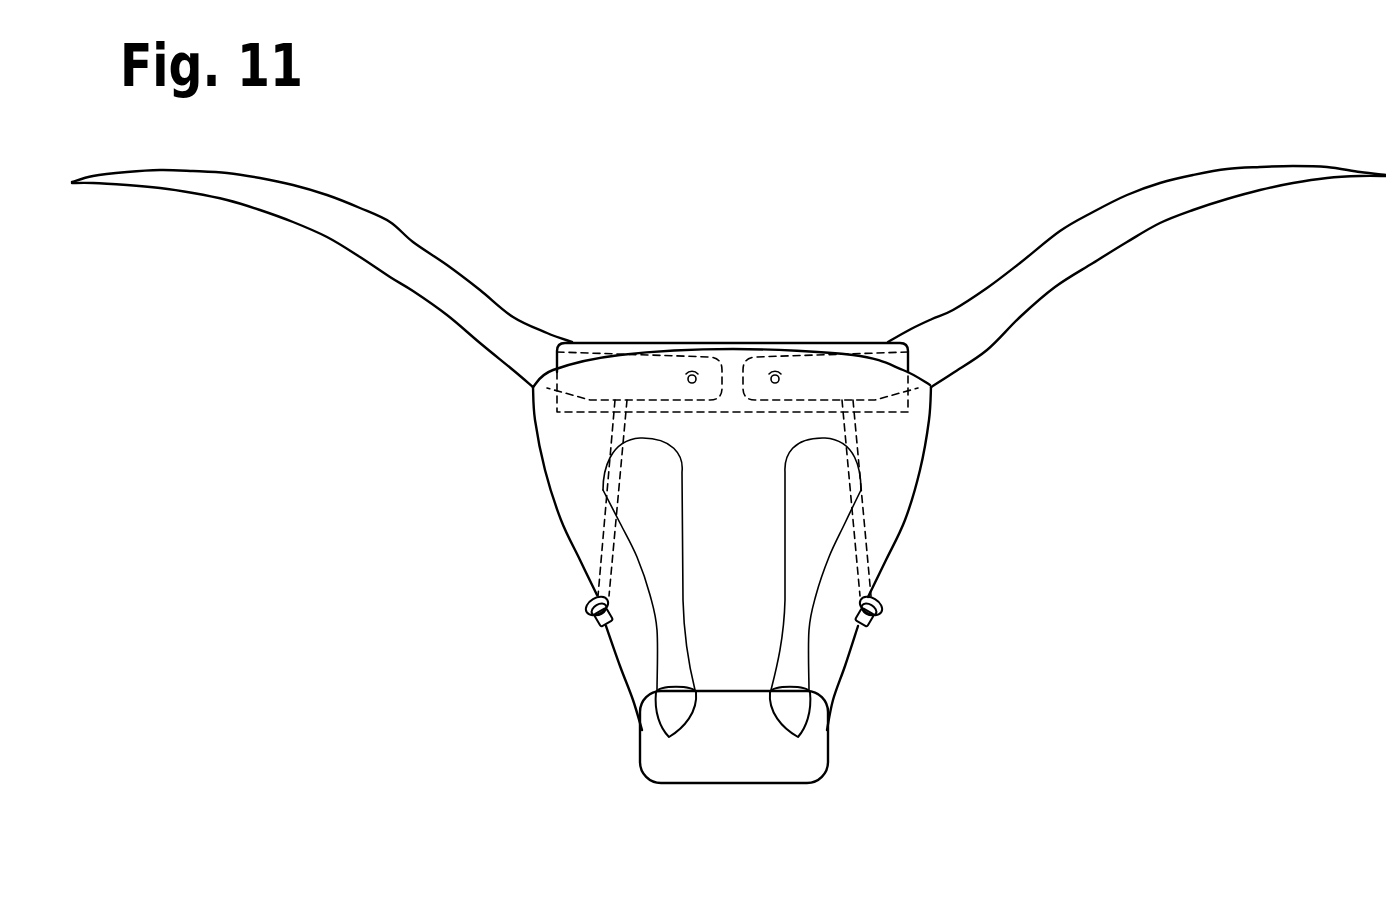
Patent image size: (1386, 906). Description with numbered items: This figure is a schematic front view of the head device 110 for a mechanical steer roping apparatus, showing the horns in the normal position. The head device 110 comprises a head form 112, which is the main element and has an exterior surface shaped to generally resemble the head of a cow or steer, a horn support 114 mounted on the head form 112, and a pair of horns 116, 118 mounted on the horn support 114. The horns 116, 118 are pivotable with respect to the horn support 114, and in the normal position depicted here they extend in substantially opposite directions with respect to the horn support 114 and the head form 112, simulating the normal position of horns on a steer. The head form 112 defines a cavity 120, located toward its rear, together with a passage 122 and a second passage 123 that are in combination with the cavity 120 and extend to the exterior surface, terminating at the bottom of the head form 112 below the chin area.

The head device 110 is at (596, 284).
The head form 112 is at (678, 752).
The horn support 114 is at (638, 345).
The horn 116 is at (323, 217).
The horn 118 is at (1098, 232).
The cavity 120 is at (878, 418).
The passage 122 is at (612, 432).
The second passage 123 is at (862, 543).